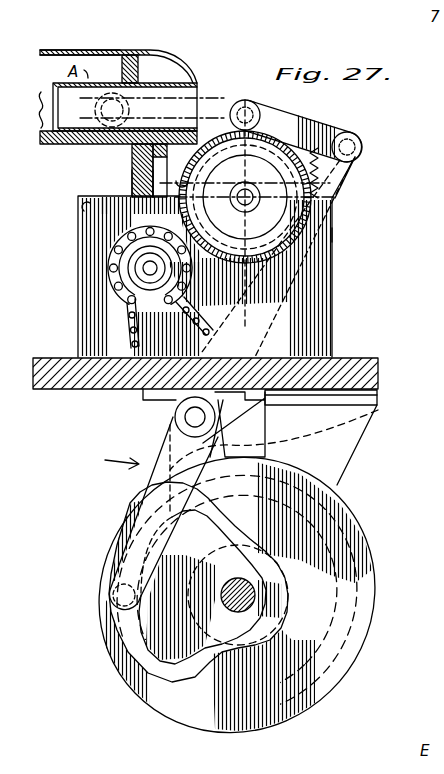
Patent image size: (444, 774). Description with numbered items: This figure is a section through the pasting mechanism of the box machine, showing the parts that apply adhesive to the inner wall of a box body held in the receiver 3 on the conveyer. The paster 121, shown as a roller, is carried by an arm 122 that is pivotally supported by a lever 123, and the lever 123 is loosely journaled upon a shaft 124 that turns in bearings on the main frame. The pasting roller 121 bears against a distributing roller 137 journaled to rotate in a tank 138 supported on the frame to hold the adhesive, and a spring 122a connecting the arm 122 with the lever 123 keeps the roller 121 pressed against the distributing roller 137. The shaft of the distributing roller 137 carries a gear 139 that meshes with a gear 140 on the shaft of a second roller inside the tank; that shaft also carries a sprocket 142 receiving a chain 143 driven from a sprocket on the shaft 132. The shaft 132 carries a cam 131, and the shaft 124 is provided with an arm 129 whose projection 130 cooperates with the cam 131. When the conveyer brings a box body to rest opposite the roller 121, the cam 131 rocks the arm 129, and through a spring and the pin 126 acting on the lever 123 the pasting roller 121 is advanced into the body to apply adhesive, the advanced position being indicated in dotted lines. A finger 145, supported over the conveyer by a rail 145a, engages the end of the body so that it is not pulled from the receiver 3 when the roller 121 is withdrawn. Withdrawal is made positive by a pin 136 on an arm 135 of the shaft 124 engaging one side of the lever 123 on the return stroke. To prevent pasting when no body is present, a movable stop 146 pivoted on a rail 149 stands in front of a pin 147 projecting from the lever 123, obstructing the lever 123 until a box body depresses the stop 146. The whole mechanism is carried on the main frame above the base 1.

The base plate 1 is at (379, 379).
The receiver 3 is at (129, 133).
The paster 121 is at (108, 97).
The arm 122 is at (282, 123).
The spring 122a is at (320, 176).
The lever 123 is at (349, 191).
The shaft 124 is at (174, 416).
The pin 126 is at (332, 486).
The arm 129 is at (130, 540).
The projection 130 is at (108, 599).
The cam 131 is at (371, 549).
The shaft 132 is at (255, 595).
The arm 135 is at (225, 442).
The pin 136 is at (377, 409).
The distributing roller 137 is at (330, 112).
The tank 138 is at (313, 327).
The gear 139 is at (262, 228).
The gear 140 is at (100, 276).
The sprocket 142 is at (143, 311).
The chain 143 is at (212, 331).
The finger 145 is at (157, 51).
The rail 145a is at (114, 51).
The movable stop 146 is at (128, 154).
The pin 147 is at (334, 236).
The rail 149 is at (128, 189).